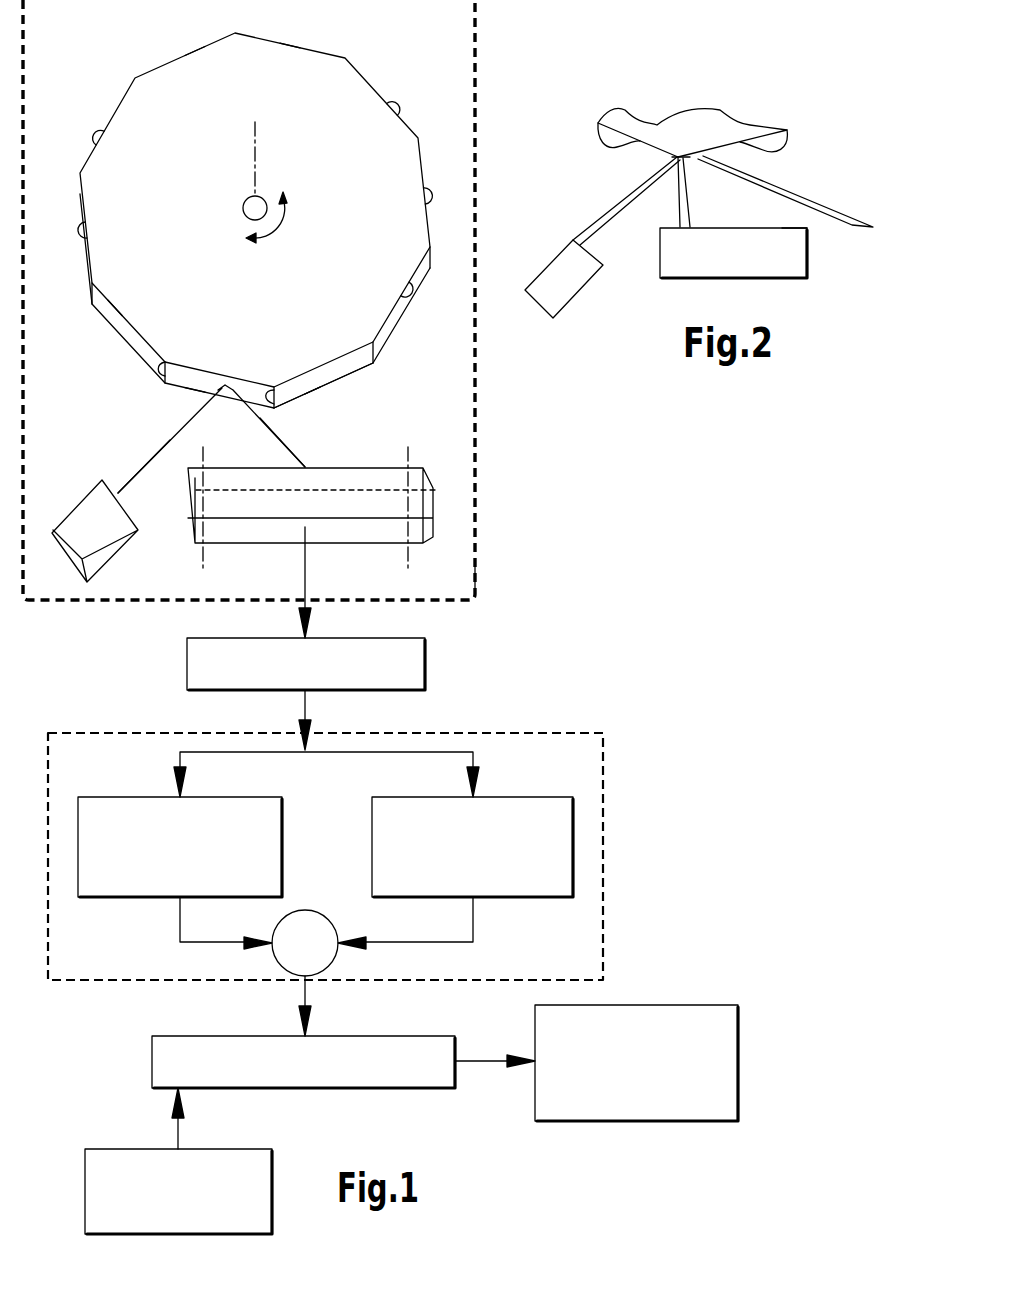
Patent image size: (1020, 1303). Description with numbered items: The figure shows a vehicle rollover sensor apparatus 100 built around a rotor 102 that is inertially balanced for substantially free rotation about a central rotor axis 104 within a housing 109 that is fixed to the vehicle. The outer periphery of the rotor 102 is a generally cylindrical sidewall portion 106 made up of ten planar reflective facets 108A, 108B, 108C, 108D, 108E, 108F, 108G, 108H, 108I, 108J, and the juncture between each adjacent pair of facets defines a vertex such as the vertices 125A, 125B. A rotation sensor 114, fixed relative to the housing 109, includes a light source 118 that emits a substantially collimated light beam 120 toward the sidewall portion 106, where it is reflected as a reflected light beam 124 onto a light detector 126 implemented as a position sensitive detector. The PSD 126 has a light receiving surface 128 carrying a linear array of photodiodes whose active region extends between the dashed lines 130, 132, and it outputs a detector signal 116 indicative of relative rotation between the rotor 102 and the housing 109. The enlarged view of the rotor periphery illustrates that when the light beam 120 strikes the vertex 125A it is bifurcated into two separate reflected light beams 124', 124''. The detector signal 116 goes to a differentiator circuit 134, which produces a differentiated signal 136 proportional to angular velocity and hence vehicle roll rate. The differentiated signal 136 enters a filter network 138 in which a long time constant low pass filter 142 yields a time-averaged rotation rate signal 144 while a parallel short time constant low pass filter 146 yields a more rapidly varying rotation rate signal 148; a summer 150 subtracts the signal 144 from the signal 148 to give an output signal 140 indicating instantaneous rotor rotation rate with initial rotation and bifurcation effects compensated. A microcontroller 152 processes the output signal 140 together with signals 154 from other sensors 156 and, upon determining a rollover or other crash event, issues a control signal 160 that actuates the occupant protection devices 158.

In FIG. 1, the vehicle rollover sensor apparatus 100 is at (520, 577).
In FIG. 1, the rotor 102 is at (339, 102).
In FIG. 1, the rotor axis 104 is at (253, 163).
In FIG. 1, the sidewall portion 106 is at (347, 384).
In FIG. 1, the facet 108A is at (115, 322).
In FIG. 2, the facet 108A is at (630, 143).
In FIG. 1, the facet 108B is at (193, 383).
In FIG. 2, the facet 108B is at (760, 150).
In FIG. 1, the facet 108C is at (312, 382).
In FIG. 1, the facet 108D is at (409, 282).
In FIG. 1, the facet 108E is at (423, 190).
In FIG. 1, the facet 108F is at (397, 116).
In FIG. 1, the facet 108G is at (290, 44).
In FIG. 1, the facet 108H is at (195, 50).
In FIG. 1, the facet 108I is at (104, 131).
In FIG. 1, the facet 108J is at (87, 238).
In FIG. 1, the housing 109 is at (475, 383).
In FIG. 1, the rotation sensor 114 is at (109, 435).
In FIG. 1, the detector signal 116 is at (305, 570).
In FIG. 1, the light source 118 is at (57, 518).
In FIG. 2, the light source 118 is at (560, 287).
In FIG. 1, the light beam 120 is at (143, 465).
In FIG. 2, the light beam 120 is at (643, 193).
In FIG. 1, the reflected light beam 124 is at (317, 442).
In FIG. 2, the reflected light beam 124' is at (644, 236).
In FIG. 2, the reflected light beam 124'' is at (792, 191).
In FIG. 1, the vertex 125A is at (162, 358).
In FIG. 2, the vertex 125A is at (683, 165).
In FIG. 1, the vertex 125B is at (263, 386).
In FIG. 1, the position sensitive detector 126 is at (430, 507).
In FIG. 2, the position sensitive detector 126 is at (762, 280).
In FIG. 1, the light receiving surface 128 is at (385, 467).
In FIG. 2, the light receiving surface 128 is at (782, 225).
In FIG. 1, the dashed line 130 is at (203, 560).
In FIG. 1, the dashed line 132 is at (435, 490).
In FIG. 1, the differentiator circuit 134 is at (428, 688).
In FIG. 1, the differentiated signal 136 is at (305, 708).
In FIG. 1, the filter network 138 is at (618, 796).
In FIG. 1, the output signal 140 is at (303, 996).
In FIG. 1, the long time constant filter 142 is at (235, 797).
In FIG. 1, the time-averaged rotation rate signal 144 is at (178, 913).
In FIG. 1, the short time constant filter 146 is at (492, 797).
In FIG. 1, the rapidly varying rotation rate signal 148 is at (472, 923).
In FIG. 1, the summer 150 is at (293, 910).
In FIG. 1, the microcontroller 152 is at (152, 1051).
In FIG. 1, the signals 154 is at (178, 1134).
In FIG. 1, the other sensors 156 is at (210, 1236).
In FIG. 1, the occupant protection devices 158 is at (581, 1121).
In FIG. 1, the control signal 160 is at (478, 1058).